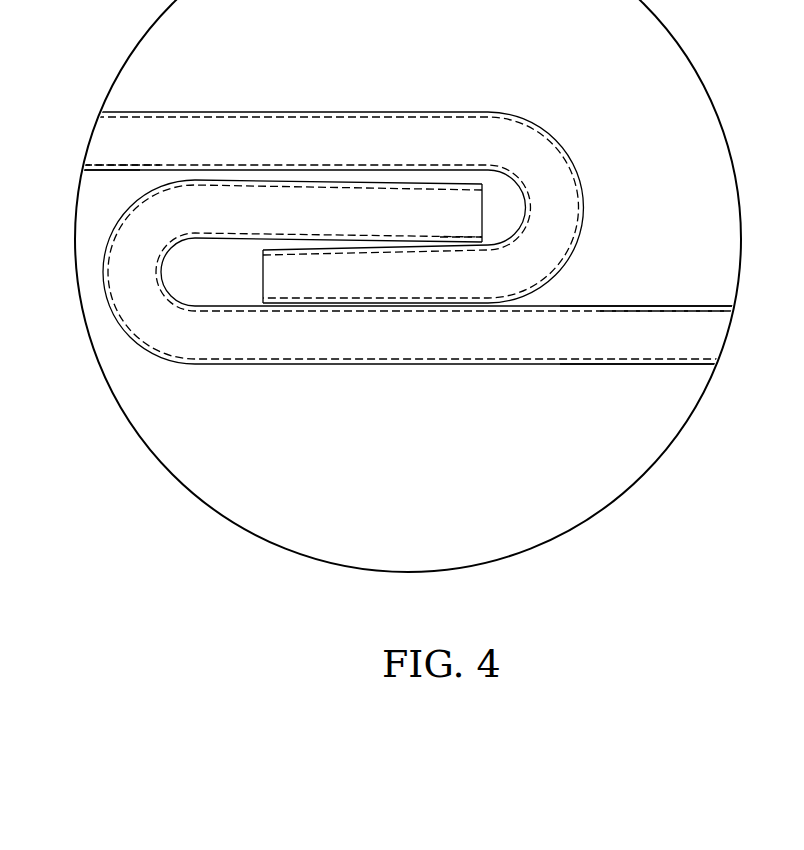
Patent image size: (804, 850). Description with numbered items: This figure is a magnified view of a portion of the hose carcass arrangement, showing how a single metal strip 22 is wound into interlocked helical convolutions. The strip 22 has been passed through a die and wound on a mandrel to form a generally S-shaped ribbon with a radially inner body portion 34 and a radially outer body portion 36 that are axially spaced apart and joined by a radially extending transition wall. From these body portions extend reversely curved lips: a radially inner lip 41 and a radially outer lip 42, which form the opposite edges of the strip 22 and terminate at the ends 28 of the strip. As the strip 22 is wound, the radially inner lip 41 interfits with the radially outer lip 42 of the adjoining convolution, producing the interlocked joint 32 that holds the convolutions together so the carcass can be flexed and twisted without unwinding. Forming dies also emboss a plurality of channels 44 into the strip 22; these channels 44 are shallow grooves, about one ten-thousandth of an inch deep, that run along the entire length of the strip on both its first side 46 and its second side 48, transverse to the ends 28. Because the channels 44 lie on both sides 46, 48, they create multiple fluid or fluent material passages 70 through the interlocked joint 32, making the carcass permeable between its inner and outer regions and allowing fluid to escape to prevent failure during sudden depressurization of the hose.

The strip 22 is at (391, 240).
The ends of the strip 28 is at (263, 277).
The interlocked joint 32 is at (544, 57).
The radially inner body portion 34 is at (323, 133).
The radially outer body portion 36 is at (402, 340).
The radially inner lip 41 is at (328, 272).
The radially outer lip 42 is at (468, 230).
The channels 44 is at (583, 193).
The first side of the strip 46 is at (410, 112).
The second side of the strip 48 is at (652, 306).
The fluid passages 70 is at (458, 165).